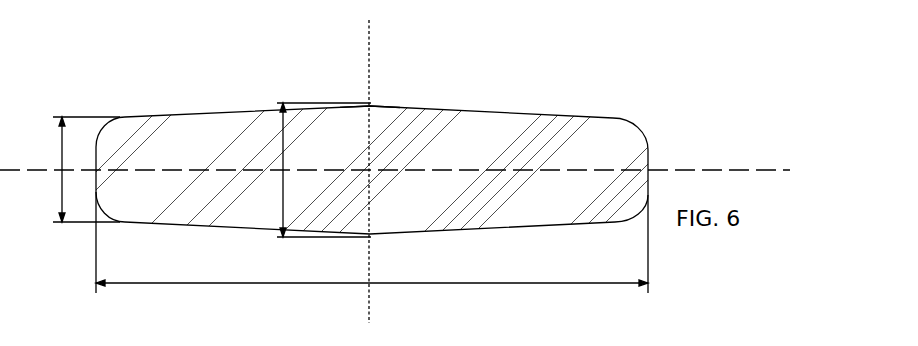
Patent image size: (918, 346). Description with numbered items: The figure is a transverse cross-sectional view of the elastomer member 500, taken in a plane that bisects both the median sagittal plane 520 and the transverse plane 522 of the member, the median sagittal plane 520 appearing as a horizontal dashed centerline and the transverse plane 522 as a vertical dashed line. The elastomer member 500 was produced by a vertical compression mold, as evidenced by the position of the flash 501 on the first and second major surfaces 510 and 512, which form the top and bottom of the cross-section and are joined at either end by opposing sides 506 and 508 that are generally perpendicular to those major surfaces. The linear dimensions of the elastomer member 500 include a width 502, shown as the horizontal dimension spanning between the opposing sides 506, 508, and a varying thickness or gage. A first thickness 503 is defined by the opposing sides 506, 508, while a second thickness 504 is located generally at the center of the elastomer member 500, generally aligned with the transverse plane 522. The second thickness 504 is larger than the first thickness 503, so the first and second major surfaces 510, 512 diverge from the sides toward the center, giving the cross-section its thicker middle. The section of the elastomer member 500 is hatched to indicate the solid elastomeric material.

The elastomer member 500 is at (465, 122).
The flash 501 is at (369, 76).
The width 502 is at (390, 283).
The first thickness 503 is at (63, 163).
The second thickness 504 is at (282, 140).
The opposing side 506 is at (650, 140).
The opposing side 508 is at (96, 177).
The first major surface 510 is at (578, 117).
The second major surface 512 is at (565, 228).
The median sagittal plane 520 is at (395, 144).
The transverse plane 522 is at (369, 39).